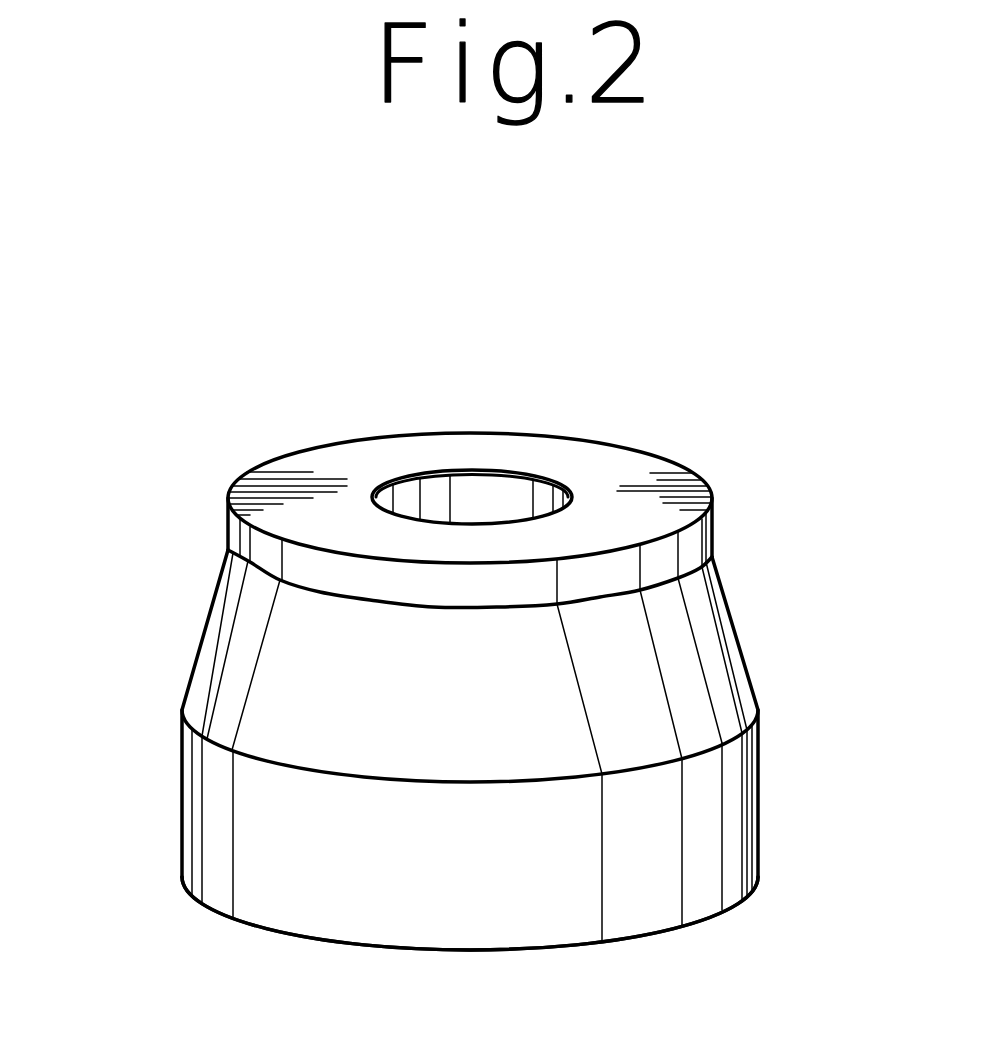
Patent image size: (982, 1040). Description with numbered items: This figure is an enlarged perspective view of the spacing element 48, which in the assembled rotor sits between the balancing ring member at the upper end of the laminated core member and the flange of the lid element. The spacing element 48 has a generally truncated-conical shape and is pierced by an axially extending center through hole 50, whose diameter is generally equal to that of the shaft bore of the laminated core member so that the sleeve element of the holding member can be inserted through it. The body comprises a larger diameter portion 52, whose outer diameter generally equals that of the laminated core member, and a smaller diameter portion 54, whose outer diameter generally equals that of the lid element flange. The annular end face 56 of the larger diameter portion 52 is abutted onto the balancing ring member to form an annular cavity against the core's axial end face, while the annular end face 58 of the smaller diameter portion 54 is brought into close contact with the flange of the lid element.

The spacing element 48 is at (309, 371).
The center through hole 50 is at (513, 492).
The larger diameter portion 52 is at (205, 798).
The smaller diameter portion 54 is at (228, 527).
The annular end face 56 is at (667, 930).
The annular end face 58 is at (650, 497).